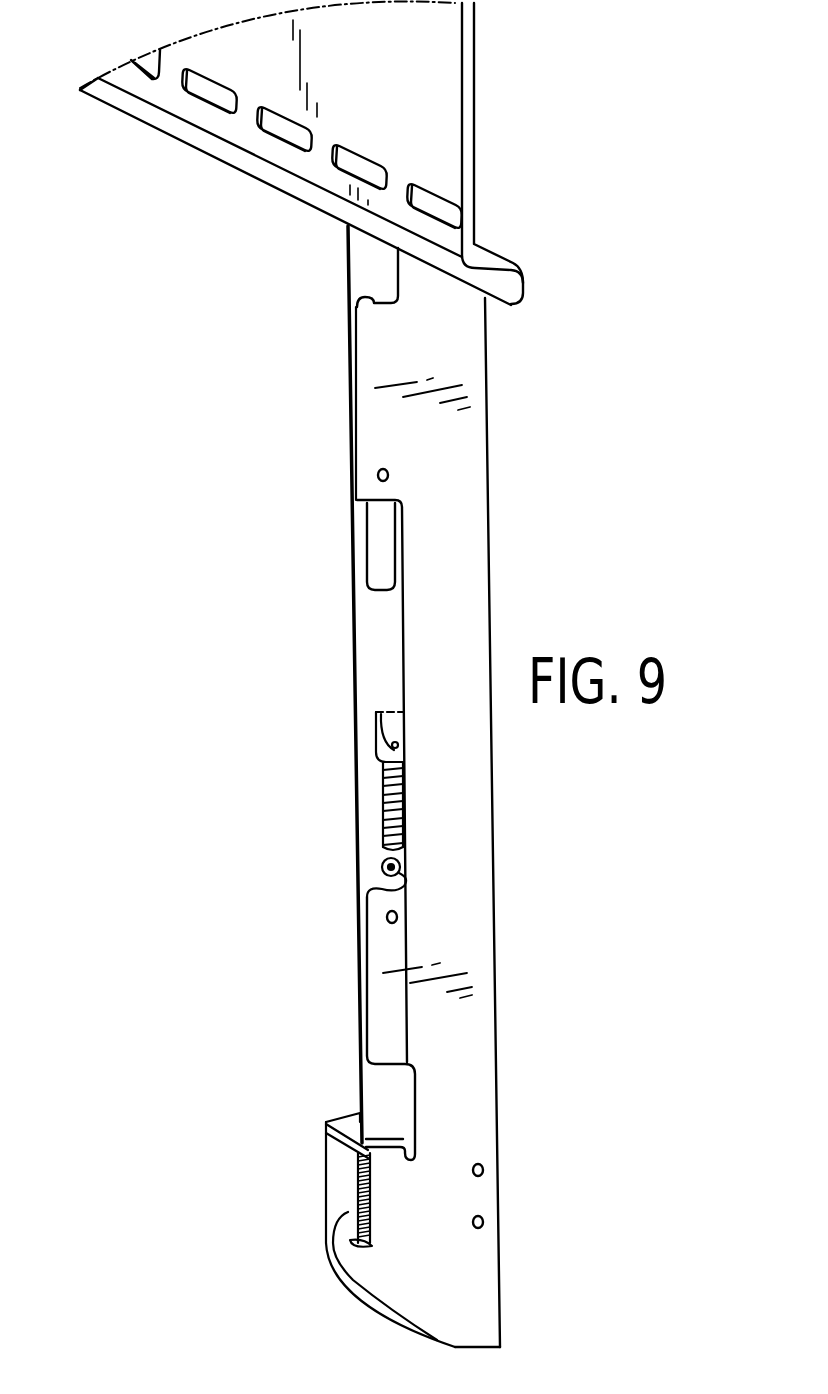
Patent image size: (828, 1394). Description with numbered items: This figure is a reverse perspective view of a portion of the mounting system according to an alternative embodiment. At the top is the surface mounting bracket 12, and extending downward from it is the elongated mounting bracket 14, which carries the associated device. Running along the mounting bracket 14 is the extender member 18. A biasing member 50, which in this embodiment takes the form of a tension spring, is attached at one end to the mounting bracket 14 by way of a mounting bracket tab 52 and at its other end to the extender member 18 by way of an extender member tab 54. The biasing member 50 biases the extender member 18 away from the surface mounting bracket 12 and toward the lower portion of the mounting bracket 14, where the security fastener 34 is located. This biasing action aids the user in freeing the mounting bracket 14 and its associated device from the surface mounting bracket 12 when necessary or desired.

The surface mounting bracket 12 is at (438, 134).
The mounting bracket 14 is at (463, 552).
The extender member 18 is at (372, 660).
The security fastener 34 is at (333, 1250).
The biasing member 50 is at (385, 805).
The mounting bracket tab 52 is at (395, 866).
The extender member tab 54 is at (387, 730).